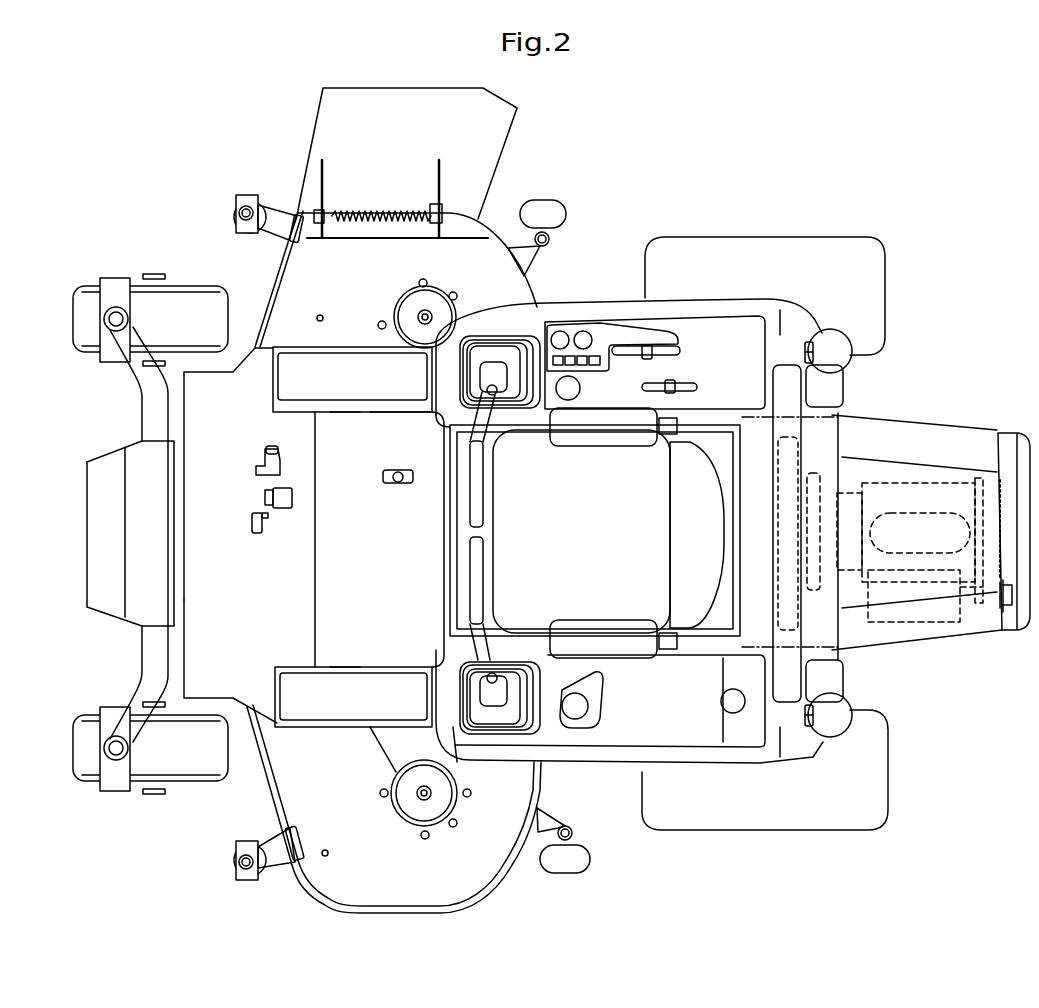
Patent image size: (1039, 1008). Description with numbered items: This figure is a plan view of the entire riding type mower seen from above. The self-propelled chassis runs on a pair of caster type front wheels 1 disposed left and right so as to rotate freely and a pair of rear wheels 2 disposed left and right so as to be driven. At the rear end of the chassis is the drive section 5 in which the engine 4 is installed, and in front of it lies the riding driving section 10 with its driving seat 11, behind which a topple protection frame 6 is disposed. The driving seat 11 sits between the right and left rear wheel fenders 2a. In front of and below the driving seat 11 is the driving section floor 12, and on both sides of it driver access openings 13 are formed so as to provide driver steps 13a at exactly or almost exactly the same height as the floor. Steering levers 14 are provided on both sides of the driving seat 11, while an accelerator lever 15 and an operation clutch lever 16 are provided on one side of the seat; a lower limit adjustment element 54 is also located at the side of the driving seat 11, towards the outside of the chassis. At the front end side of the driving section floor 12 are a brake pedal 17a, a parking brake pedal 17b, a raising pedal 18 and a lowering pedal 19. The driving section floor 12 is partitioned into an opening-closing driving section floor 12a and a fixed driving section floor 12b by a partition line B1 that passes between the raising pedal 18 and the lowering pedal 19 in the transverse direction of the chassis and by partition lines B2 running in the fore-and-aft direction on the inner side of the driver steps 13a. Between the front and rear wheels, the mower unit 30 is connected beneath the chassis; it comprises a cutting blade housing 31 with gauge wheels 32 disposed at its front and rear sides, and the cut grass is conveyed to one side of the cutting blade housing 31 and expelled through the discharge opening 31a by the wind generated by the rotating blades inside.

The caster type front wheels 1 is at (75, 320).
The rear wheels 2 is at (766, 245).
The rear wheel fenders 2a is at (588, 317).
The engine 4 is at (928, 482).
The drive section 5 is at (982, 418).
The topple protection frame 6 is at (797, 386).
The riding driving section 10 is at (624, 288).
The driving seat 11 is at (616, 600).
The driving section floor 12 is at (178, 415).
The opening-closing driving section floor 12a is at (400, 428).
The fixed driving section floor 12b is at (193, 655).
The driver access openings 13 is at (313, 340).
The bracket plate 13a is at (348, 358).
The steering levers 14 is at (488, 491).
The accelerator lever 15 is at (677, 384).
The operation clutch lever 16 is at (649, 344).
The brake pedal 17a is at (293, 500).
The parking brake pedal 17b is at (259, 537).
The raising pedal 18 is at (399, 486).
The lowering pedal 19 is at (283, 468).
The mower unit 30 is at (272, 272).
The cutting blade housing 31 is at (276, 323).
The discharge opening 31a is at (498, 133).
The gauge wheels 32 is at (232, 214).
The lower limit adjustment element 54 is at (583, 390).
The partition line B1 is at (318, 572).
The partition lines B2 is at (353, 414).